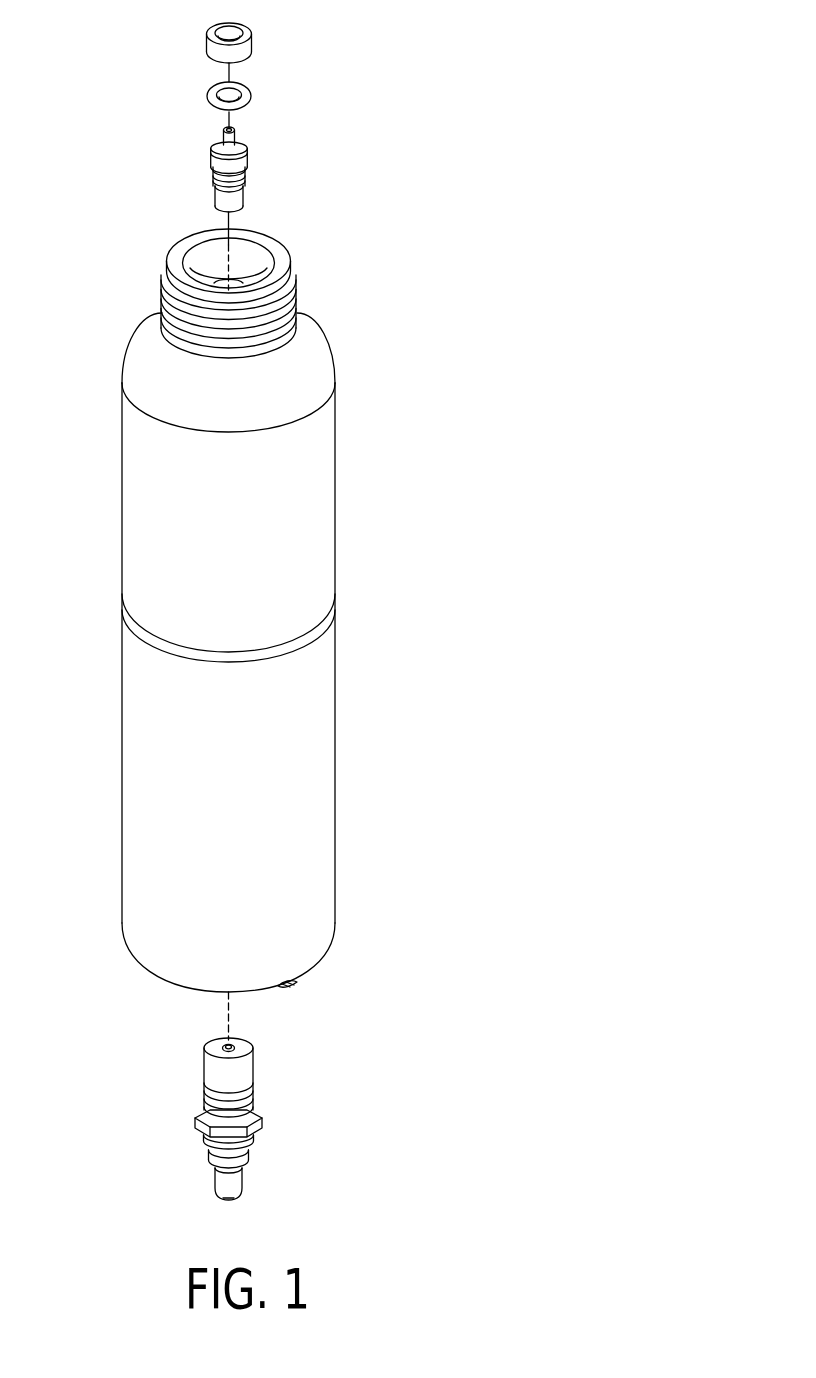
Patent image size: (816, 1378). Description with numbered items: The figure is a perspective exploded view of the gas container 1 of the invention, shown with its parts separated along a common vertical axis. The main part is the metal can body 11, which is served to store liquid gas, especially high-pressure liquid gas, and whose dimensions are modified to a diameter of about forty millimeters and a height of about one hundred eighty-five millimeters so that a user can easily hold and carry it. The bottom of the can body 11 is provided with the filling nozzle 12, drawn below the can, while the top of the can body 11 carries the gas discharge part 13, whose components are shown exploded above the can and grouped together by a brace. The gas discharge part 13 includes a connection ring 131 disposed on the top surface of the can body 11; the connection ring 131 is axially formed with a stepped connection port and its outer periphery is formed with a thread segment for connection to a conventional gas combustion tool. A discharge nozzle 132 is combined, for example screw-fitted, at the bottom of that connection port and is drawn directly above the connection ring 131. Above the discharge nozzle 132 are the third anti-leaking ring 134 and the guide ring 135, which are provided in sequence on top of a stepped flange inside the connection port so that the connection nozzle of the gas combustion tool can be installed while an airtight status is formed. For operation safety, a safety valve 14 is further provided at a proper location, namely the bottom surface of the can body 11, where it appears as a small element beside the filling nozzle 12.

The gas container 1 is at (423, 372).
The metal can body 11 is at (335, 507).
The filling nozzle 12 is at (247, 1088).
The gas discharge part 13 is at (137, 38).
The safety valve 14 is at (297, 982).
The connection ring 131 is at (297, 286).
The discharge nozzle 132 is at (247, 154).
The third anti-leaking ring 134 is at (246, 91).
The guide ring 135 is at (250, 44).